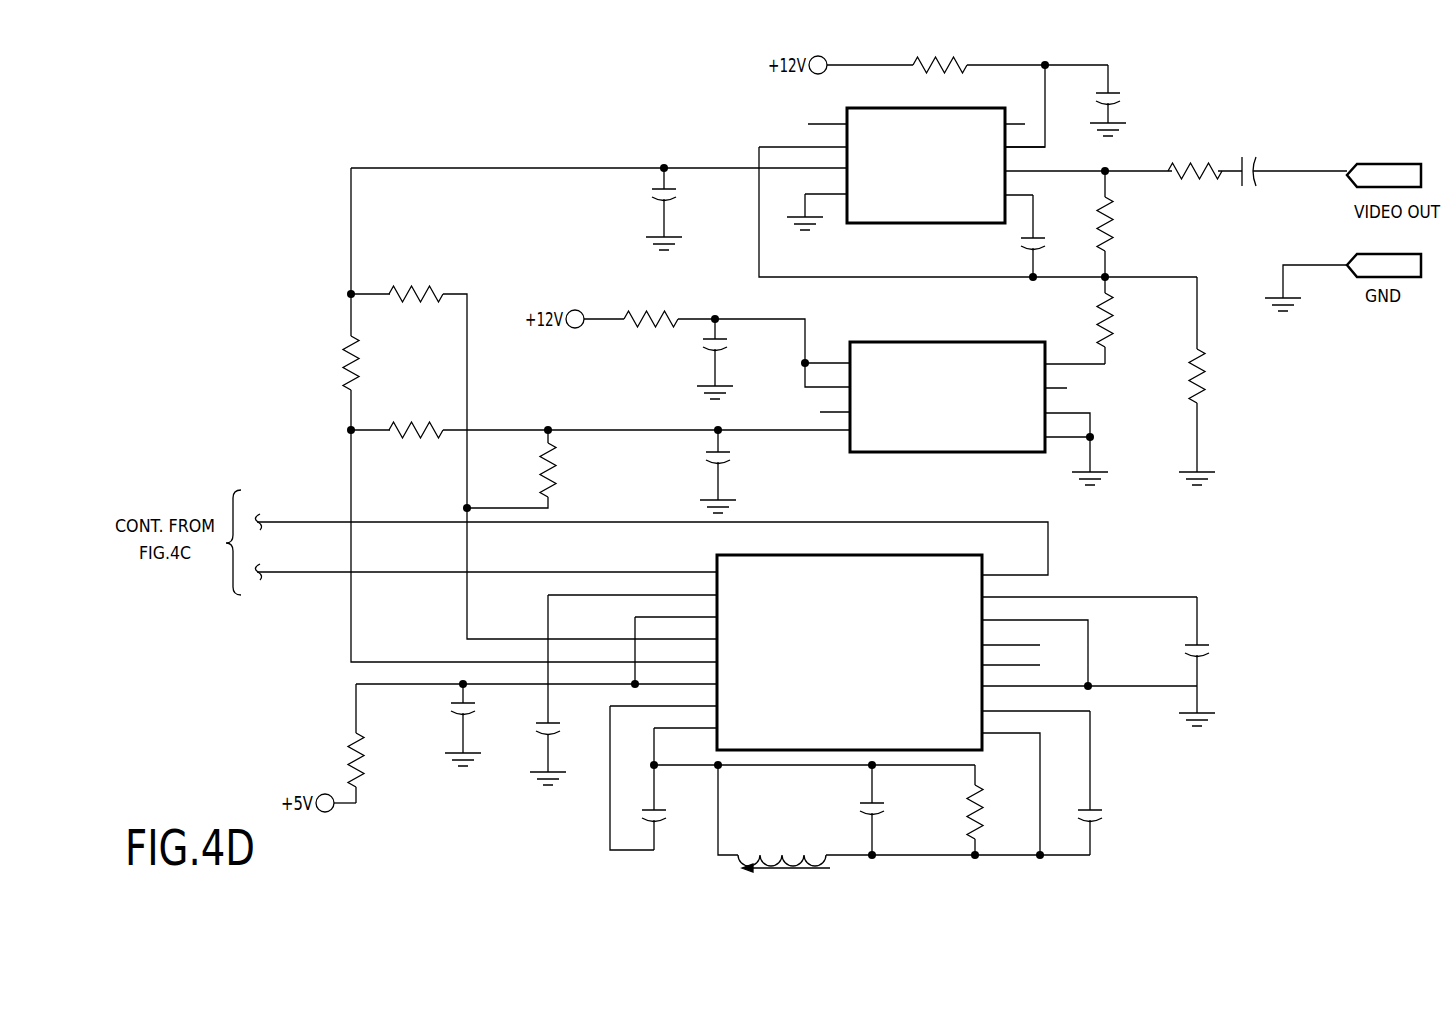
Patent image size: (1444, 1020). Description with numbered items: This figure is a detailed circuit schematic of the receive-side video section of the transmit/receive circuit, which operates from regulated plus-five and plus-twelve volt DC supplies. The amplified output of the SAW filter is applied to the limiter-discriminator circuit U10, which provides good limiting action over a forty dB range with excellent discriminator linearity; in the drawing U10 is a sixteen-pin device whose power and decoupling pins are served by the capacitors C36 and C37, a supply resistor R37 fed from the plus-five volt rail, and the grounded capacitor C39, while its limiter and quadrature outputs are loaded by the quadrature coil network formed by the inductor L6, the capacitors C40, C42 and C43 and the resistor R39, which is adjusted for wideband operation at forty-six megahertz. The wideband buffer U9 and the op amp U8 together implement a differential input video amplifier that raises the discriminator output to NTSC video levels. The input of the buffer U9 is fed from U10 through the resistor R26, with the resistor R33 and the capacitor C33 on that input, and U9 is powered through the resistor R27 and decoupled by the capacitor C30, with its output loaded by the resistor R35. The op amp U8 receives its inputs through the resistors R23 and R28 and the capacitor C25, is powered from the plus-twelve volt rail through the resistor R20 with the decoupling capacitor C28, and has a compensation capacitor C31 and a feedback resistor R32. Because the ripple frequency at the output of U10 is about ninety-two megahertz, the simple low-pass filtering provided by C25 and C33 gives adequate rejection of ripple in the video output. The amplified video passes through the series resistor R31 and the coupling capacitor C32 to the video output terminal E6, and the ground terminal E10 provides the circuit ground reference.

The resistor R20 is at (940, 53).
The capacitor C28 is at (1126, 100).
The op amp U8 is at (926, 153).
The capacitor C25 is at (683, 209).
The capacitor C31 is at (1054, 236).
The resistor R32 is at (1126, 224).
The resistor R31 is at (1195, 159).
The capacitor C32 is at (1246, 158).
The video out terminal E6 is at (1384, 175).
The ground terminal E10 is at (1343, 282).
The resistor R23 is at (416, 282).
The resistor R28 is at (334, 363).
The resistor R26 is at (416, 418).
The resistor R27 is at (651, 306).
The capacitor C30 is at (733, 359).
The wideband buffer U9 is at (948, 384).
The resistor R35 is at (1126, 320).
The resistor R33 is at (531, 469).
The capacitor C33 is at (736, 471).
The limiter-discriminator circuit U10 is at (853, 639).
The capacitor C39 is at (1185, 661).
The capacitor C36 is at (447, 725).
The capacitor C37 is at (538, 690).
The resistor R37 is at (376, 743).
The capacitor C40 is at (669, 789).
The capacitor C42 is at (852, 810).
The resistor R39 is at (956, 810).
The inductor L6 is at (784, 877).
The capacitor C43 is at (1116, 783).